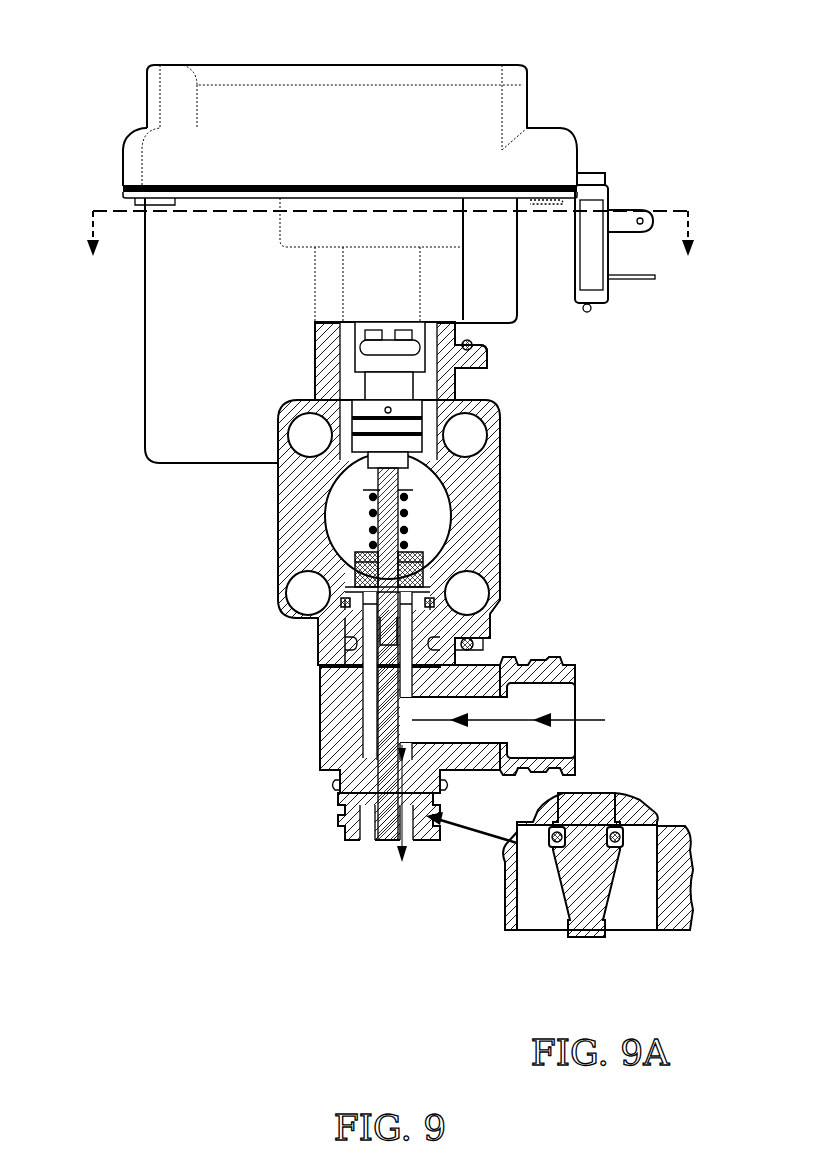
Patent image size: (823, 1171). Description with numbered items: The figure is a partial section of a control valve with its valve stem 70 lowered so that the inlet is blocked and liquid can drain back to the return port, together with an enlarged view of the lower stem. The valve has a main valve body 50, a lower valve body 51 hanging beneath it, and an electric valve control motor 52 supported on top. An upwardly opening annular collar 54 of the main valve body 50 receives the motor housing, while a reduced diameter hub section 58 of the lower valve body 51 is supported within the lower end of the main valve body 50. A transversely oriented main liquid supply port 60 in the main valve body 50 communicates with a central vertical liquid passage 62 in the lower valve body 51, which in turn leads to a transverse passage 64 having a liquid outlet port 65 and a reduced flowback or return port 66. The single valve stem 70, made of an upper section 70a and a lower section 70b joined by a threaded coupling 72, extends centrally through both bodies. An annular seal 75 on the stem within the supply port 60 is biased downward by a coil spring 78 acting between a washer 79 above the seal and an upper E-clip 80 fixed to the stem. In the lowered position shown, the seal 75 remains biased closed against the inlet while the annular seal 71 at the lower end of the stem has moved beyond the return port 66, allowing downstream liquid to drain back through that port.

In FIG. 9, the main valve body 50 is at (280, 505).
In FIG. 9, the lower valve body 51 is at (322, 776).
In FIG. 9, the electric valve control motor 52 is at (147, 405).
In FIG. 9, the annular collar 54 is at (462, 383).
In FIG. 9, the reduced diameter hub section 58 is at (335, 628).
In FIG. 9, the main liquid supply port 60 is at (330, 545).
In FIG. 9, the central vertical liquid passage 62 is at (358, 690).
In FIG. 9, the transverse passage 64 is at (560, 740).
In FIG. 9, the liquid outlet port 65 is at (578, 686).
In FIG. 9A, the liquid outlet port 65 is at (548, 932).
In FIG. 9, the flowback or return port 66 is at (345, 806).
In FIG. 9, the valve stem 70 is at (380, 748).
In FIG. 9A, the valve stem 70 is at (632, 932).
In FIG. 9, the upper section of valve stem 70a is at (376, 470).
In FIG. 9, the lower section of valve stem 70b is at (377, 718).
In FIG. 9A, the annular seal 71 is at (632, 830).
In FIG. 9, the threaded coupling 72 is at (475, 638).
In FIG. 9, the annular seal 75 is at (456, 592).
In FIG. 9, the coil spring 78 is at (411, 522).
In FIG. 9, the washer 79 is at (404, 553).
In FIG. 9, the upper E-clip 80 is at (406, 497).